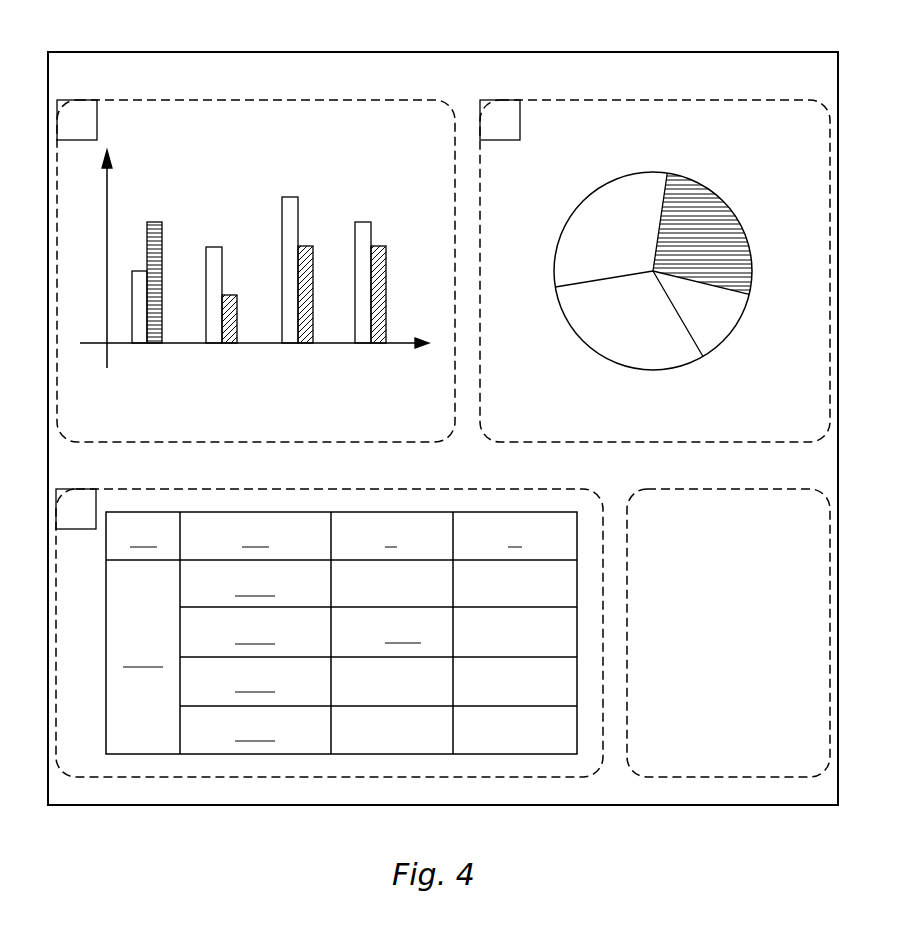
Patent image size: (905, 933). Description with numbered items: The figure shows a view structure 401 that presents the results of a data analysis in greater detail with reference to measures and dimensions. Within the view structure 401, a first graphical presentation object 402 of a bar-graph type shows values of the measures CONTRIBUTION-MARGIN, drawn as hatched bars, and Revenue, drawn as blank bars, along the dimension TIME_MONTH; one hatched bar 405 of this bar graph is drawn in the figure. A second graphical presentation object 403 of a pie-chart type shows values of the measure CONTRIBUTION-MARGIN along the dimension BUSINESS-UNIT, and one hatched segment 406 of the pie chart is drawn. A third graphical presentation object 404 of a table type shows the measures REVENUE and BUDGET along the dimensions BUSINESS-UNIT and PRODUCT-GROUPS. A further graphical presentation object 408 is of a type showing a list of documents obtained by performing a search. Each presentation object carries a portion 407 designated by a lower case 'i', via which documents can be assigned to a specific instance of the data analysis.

The view structure 401 is at (133, 52).
The first graphical presentation object 402 is at (256, 253).
The second graphical presentation object 403 is at (655, 253).
The third graphical presentation object 404 is at (130, 489).
The selected bar of bar chart 405 is at (163, 227).
The selected segment of pie chart 406 is at (703, 183).
The portion designated by a lower case 'i' 407 is at (520, 122).
The graphical presentation object showing a list of documents 408 is at (677, 489).